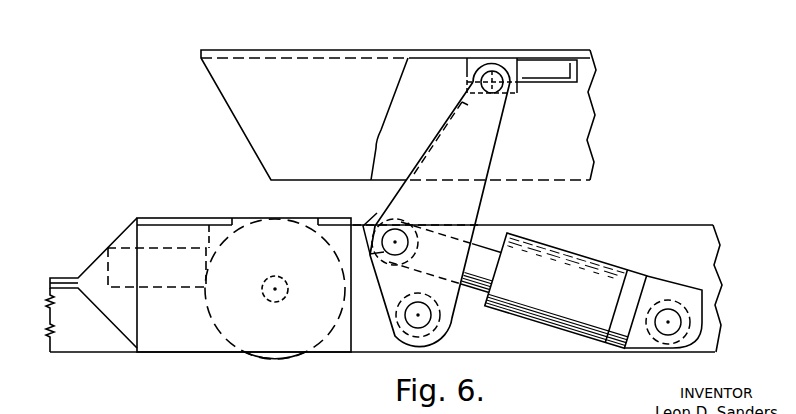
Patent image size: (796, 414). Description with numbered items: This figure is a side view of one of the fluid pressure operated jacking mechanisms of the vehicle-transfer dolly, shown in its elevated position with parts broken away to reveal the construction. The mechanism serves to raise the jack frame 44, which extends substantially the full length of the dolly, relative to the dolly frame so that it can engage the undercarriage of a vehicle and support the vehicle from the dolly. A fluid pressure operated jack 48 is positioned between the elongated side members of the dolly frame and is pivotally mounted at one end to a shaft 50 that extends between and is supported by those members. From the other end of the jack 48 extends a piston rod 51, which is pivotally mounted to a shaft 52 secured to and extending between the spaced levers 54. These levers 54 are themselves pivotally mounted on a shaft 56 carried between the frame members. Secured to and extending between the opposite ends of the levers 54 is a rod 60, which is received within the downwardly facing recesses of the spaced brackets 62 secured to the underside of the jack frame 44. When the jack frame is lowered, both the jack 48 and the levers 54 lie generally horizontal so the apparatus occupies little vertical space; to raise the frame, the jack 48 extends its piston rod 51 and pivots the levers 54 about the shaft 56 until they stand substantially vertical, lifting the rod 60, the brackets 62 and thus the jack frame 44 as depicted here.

The jack frame 44 is at (443, 49).
The fluid pressure operated jack 48 is at (606, 263).
The shaft 50 is at (668, 326).
The piston rod 51 is at (493, 243).
The shaft 52 is at (394, 240).
The spaced levers 54 is at (483, 196).
The shaft 56 is at (422, 316).
The rod 60 is at (494, 89).
The spaced brackets 62 is at (518, 66).